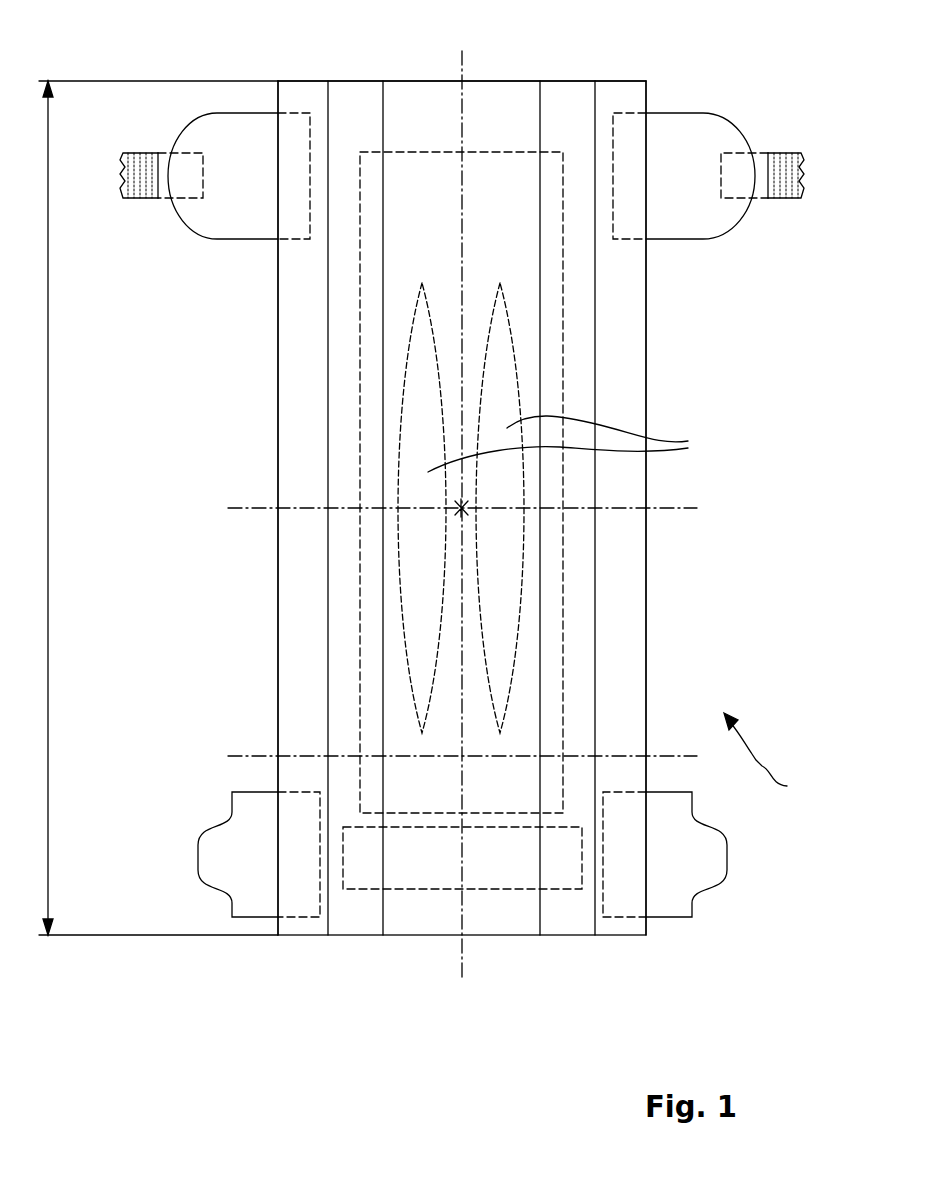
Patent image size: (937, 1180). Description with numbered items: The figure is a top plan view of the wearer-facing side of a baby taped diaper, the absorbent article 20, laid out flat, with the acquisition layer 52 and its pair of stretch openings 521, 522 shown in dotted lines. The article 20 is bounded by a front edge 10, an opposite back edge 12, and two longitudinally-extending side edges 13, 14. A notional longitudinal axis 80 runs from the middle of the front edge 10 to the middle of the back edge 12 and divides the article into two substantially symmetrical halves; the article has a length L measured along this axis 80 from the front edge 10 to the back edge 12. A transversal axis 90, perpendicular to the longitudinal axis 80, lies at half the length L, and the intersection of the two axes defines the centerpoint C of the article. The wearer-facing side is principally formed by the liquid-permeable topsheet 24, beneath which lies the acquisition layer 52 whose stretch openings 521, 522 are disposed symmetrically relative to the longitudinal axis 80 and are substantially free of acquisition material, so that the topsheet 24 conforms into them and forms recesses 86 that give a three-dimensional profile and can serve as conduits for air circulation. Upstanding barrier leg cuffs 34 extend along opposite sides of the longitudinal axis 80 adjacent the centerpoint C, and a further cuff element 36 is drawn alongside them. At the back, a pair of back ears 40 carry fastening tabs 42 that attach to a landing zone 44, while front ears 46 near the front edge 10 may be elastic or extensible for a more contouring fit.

The front edge 10 is at (605, 937).
The back edge 12 is at (617, 80).
The longitudinally-extending side edge 13 is at (646, 640).
The longitudinally-extending side edge 14 is at (278, 617).
The absorbent article 20 is at (771, 760).
The topsheet 24 is at (412, 98).
The barrier leg cuff 34 is at (345, 392).
The side portion 36 is at (345, 682).
The back ear 40 is at (225, 210).
The fastening tab 42 is at (163, 192).
The landing zone 44 is at (364, 880).
The front ear 46 is at (220, 863).
The acquisition layer 52 is at (563, 382).
The stretch opening 521 is at (437, 297).
The stretch opening 522 is at (517, 297).
The longitudinal axis 80 is at (458, 958).
The recess 86 is at (574, 444).
The transversal axis 90 is at (683, 510).
The centerpoint C is at (478, 523).
The length L is at (158, 508).